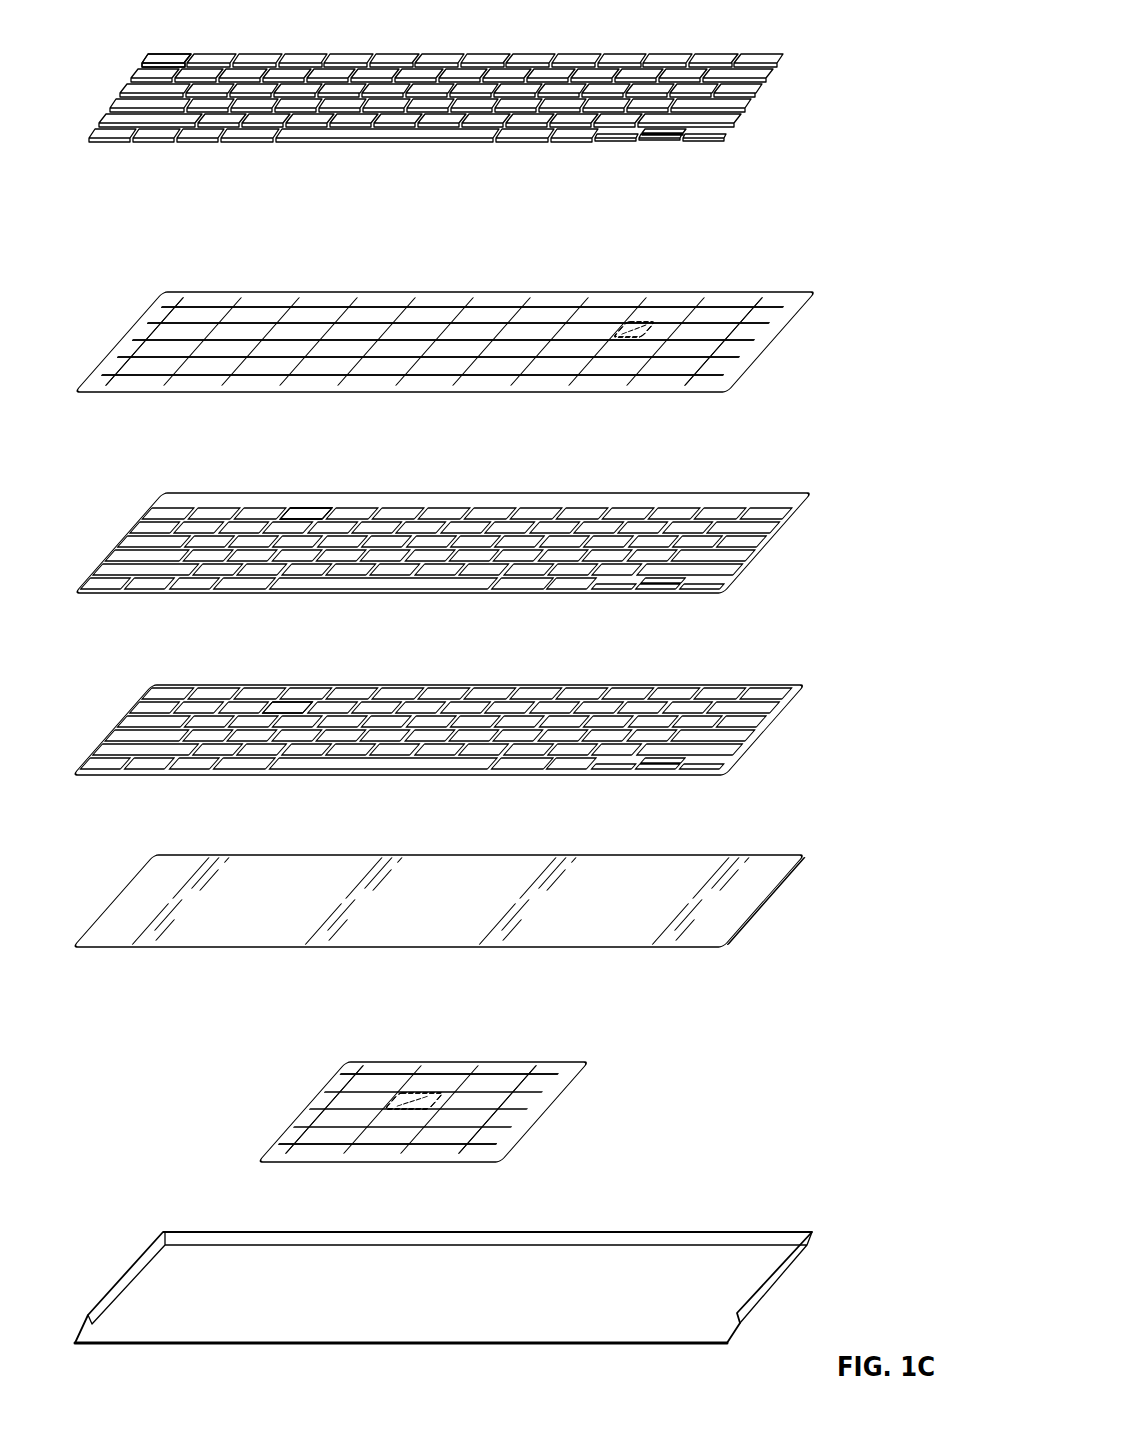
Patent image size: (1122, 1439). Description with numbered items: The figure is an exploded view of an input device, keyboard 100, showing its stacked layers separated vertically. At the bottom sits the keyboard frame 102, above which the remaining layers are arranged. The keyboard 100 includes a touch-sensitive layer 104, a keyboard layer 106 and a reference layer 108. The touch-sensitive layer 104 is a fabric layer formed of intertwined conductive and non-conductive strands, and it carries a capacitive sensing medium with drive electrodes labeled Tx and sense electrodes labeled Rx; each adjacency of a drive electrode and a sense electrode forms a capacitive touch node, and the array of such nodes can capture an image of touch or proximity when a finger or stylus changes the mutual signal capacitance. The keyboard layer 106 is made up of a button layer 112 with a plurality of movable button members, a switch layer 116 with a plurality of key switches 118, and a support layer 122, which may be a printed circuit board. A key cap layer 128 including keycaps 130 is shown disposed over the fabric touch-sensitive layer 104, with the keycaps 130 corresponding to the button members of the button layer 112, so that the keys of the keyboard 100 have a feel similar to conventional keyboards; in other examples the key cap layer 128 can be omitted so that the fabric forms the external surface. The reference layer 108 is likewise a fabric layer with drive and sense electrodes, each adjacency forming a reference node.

The keyboard 100 is at (654, 38).
The keyboard frame 102 is at (465, 1232).
The touch-sensitive layer 104 is at (445, 316).
The keyboard layer 106 is at (827, 950).
The reference layer 108 is at (497, 1073).
The button layer 112 is at (515, 516).
The switch layer 116 is at (434, 709).
The key switch 118 is at (188, 678).
The support layer 122 is at (470, 855).
The key cap layer 128 is at (417, 188).
The keycap 130 is at (122, 34).